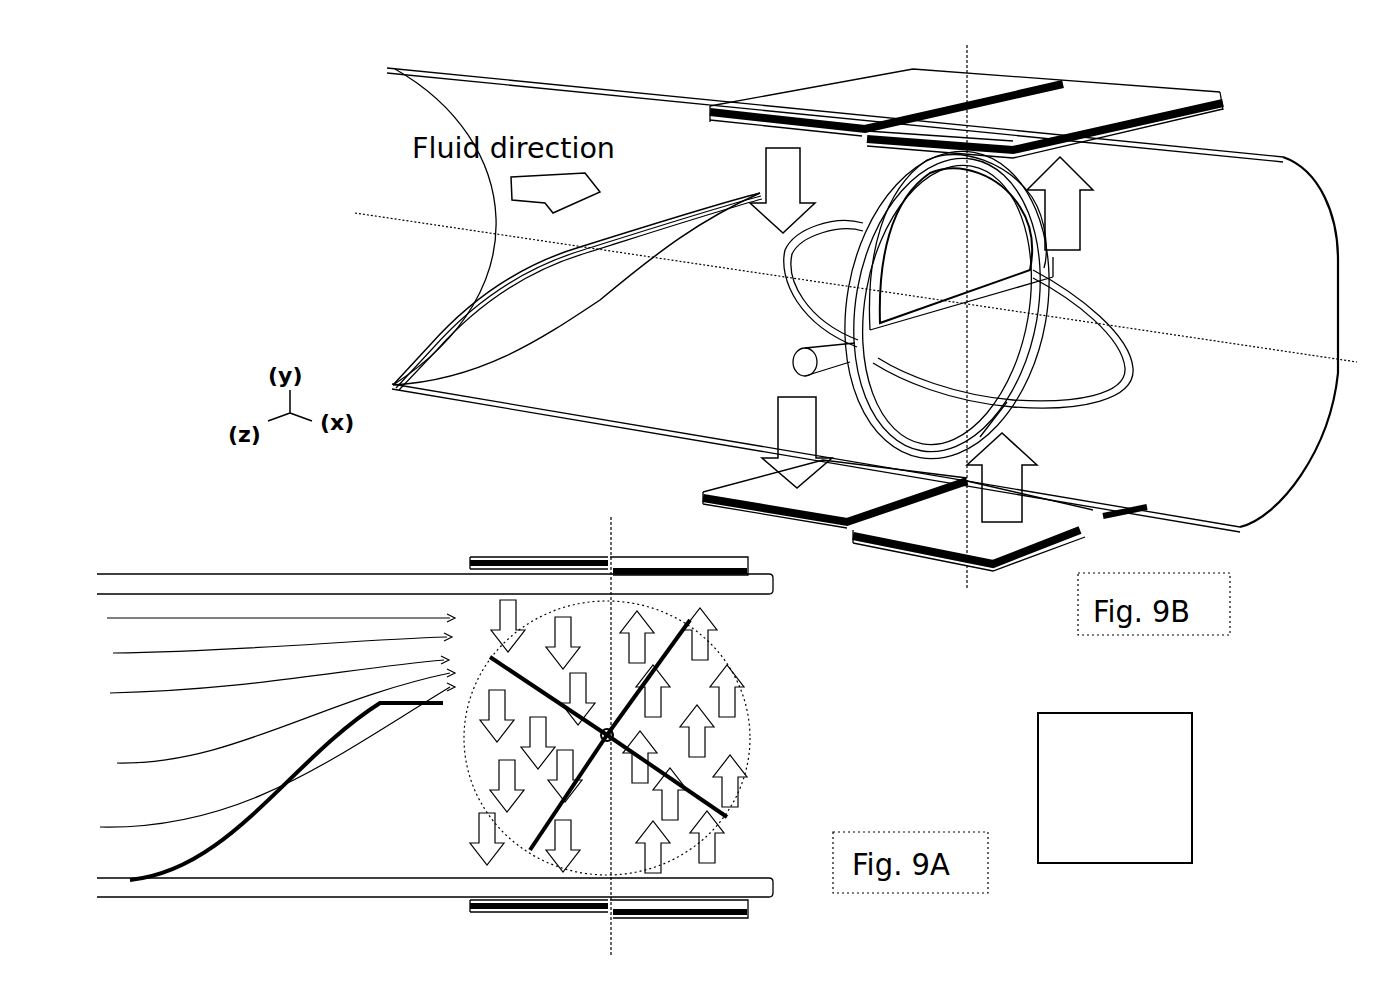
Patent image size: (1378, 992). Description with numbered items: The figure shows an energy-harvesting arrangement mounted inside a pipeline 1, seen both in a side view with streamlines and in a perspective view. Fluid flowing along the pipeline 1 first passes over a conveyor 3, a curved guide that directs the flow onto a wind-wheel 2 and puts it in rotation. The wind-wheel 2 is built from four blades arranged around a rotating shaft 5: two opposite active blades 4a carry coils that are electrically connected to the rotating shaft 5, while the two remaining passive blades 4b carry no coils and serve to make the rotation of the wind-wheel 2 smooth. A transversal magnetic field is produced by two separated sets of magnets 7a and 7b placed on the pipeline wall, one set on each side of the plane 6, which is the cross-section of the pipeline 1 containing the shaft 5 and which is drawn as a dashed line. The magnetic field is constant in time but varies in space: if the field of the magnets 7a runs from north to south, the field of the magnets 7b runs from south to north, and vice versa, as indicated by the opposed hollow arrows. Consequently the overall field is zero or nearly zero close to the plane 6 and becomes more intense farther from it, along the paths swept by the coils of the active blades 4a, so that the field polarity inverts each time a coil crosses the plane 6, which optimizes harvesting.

In FIG. 9B, the pipeline 1 is at (835, 292).
In FIG. 9A, the pipeline 1 is at (435, 725).
In FIG. 9B, the wind-wheel 2 is at (1232, 342).
In FIG. 9A, the wind-wheel 2 is at (614, 737).
In FIG. 9B, the conveyor 3 is at (577, 291).
In FIG. 9A, the conveyor 3 is at (286, 791).
In FIG. 9B, the active blades 4a is at (947, 305).
In FIG. 9A, the active blades 4a is at (603, 746).
In FIG. 9B, the passive blades 4b is at (958, 314).
In FIG. 9A, the passive blades 4b is at (615, 729).
In FIG. 9B, the rotating shaft 5 is at (824, 359).
In FIG. 9A, the rotating shaft 5 is at (606, 723).
In FIG. 9B, the plane δ 6 is at (974, 317).
In FIG. 9A, the plane δ 6 is at (618, 736).
In FIG. 9B, the first set of magnets 7a is at (961, 298).
In FIG. 9A, the first set of magnets 7a is at (539, 741).
In FIG. 9B, the second set of magnets 7b is at (1038, 331).
In FIG. 9A, the second set of magnets 7b is at (679, 741).